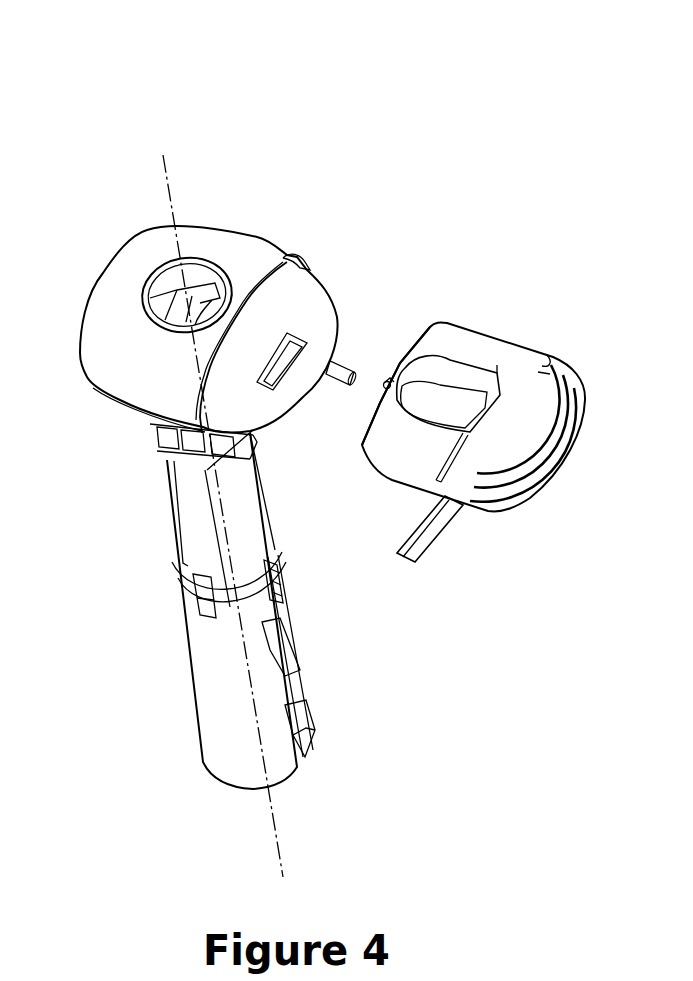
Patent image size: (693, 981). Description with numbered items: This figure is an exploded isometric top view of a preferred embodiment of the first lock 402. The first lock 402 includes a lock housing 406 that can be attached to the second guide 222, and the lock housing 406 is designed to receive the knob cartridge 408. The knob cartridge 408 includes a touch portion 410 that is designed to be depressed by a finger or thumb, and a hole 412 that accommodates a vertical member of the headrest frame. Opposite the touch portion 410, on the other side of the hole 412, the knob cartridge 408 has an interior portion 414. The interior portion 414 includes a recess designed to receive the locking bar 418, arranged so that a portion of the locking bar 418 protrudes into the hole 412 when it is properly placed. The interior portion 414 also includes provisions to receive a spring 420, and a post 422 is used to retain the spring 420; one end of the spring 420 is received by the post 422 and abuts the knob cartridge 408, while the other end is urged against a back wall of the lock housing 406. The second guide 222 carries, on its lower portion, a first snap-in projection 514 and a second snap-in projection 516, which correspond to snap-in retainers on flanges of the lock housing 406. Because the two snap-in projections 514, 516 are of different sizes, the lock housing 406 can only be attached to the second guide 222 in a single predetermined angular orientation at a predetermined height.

The first lock 402 is at (128, 145).
The lock housing 406 is at (148, 250).
The spring 420 is at (337, 372).
The post 422 is at (385, 390).
The knob cartridge 408 is at (500, 348).
The hole 412 is at (455, 392).
The touch portion 410 is at (578, 420).
The interior portion 414 is at (367, 457).
The locking bar 418 is at (437, 545).
The second guide 222 is at (185, 510).
The second snap-in projection 516 is at (190, 700).
The first snap-in projection 514 is at (310, 740).